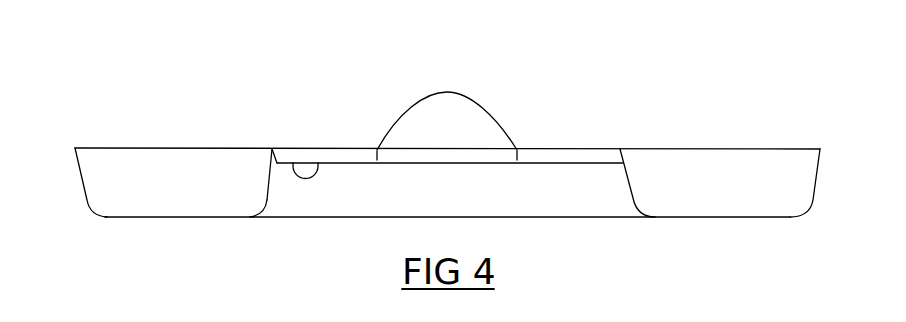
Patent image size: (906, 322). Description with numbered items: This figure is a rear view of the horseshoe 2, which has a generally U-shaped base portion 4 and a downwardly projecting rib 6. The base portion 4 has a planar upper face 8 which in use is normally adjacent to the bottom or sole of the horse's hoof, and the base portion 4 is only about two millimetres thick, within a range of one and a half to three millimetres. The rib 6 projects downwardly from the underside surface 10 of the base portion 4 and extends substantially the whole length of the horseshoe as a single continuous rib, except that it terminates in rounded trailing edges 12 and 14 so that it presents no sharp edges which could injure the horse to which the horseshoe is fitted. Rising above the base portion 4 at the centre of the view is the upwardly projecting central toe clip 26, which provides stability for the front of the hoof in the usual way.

The horseshoe 2 is at (100, 72).
The base portion 4 is at (217, 128).
The rib 6 is at (105, 178).
The planar upper face 8 is at (162, 148).
The underside surface 10 is at (318, 163).
The rounded trailing edge 12 is at (262, 213).
The rounded trailing edge 14 is at (633, 213).
The central toe clip 26 is at (470, 113).